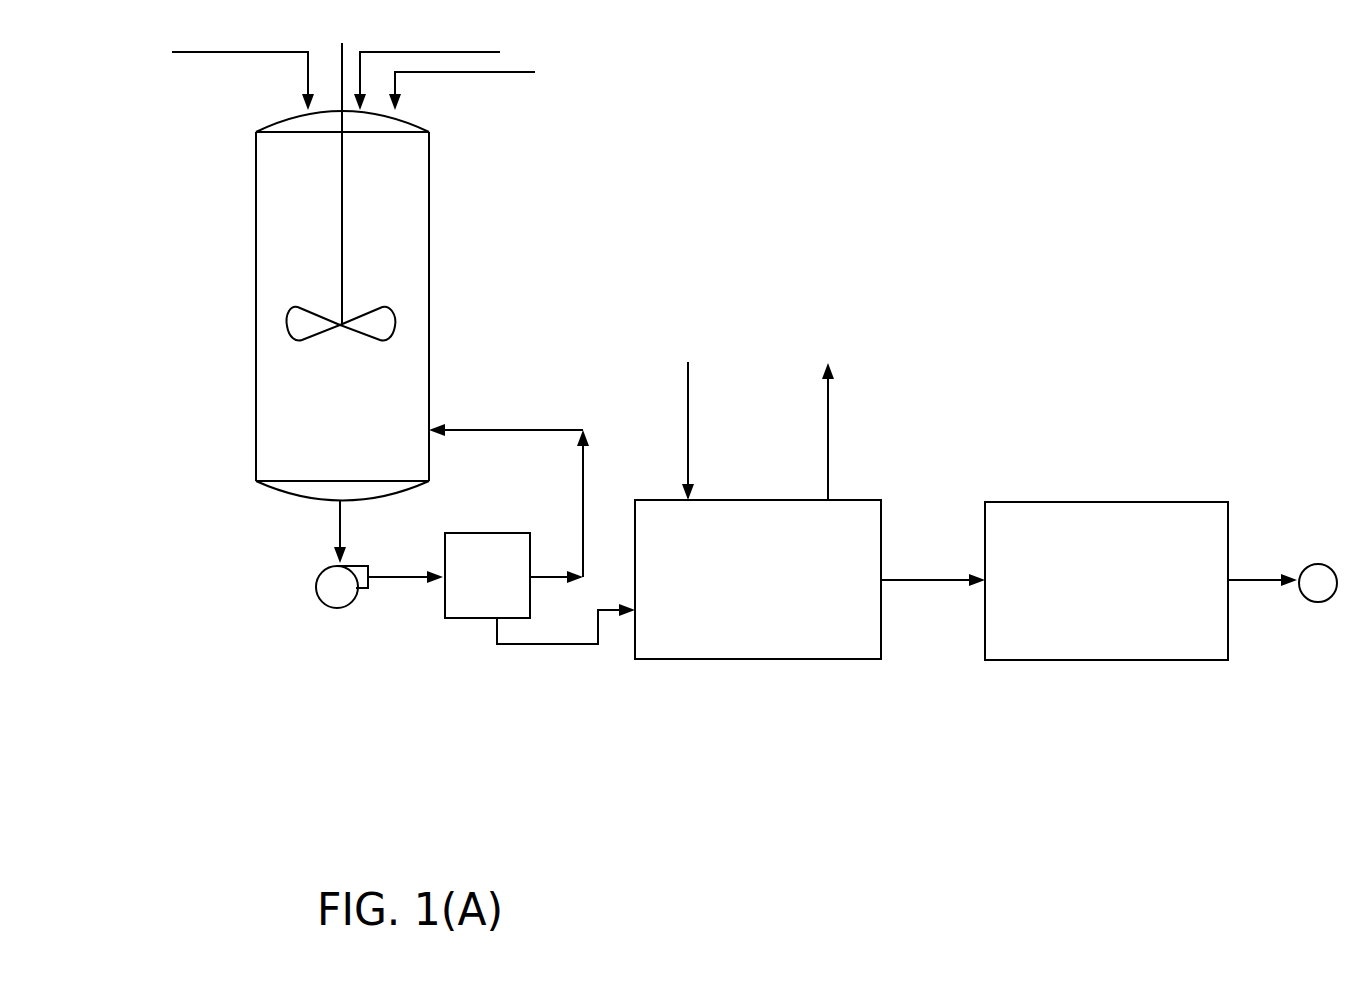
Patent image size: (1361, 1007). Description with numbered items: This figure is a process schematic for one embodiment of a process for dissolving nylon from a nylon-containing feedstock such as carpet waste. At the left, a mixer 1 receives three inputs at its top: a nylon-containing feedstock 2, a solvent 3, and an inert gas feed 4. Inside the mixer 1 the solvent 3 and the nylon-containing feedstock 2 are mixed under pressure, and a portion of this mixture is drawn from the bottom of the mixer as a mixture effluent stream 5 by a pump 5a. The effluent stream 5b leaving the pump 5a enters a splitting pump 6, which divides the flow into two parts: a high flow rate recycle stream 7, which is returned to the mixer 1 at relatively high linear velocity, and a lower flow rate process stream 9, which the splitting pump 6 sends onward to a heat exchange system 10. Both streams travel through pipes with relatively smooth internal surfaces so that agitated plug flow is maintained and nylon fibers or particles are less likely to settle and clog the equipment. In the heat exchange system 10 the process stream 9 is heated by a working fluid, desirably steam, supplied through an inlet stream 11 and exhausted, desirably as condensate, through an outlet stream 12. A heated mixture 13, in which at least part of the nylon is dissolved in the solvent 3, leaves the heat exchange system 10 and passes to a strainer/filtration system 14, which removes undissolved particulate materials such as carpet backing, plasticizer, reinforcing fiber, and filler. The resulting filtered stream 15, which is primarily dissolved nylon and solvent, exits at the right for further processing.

The mixer 1 is at (273, 235).
The nylon-containing feedstock 2 is at (231, 75).
The solvent 3 is at (437, 75).
The inert gas feed 4 is at (472, 85).
The mixture effluent stream 5 is at (340, 534).
The pump 5a is at (322, 609).
The effluent stream 5b is at (393, 580).
The splitting pump 6 is at (452, 620).
The recycle stream 7 is at (543, 576).
The process stream 9 is at (560, 647).
The heat exchange system 10 is at (700, 660).
The inlet stream 11 is at (690, 418).
The outlet stream 12 is at (846, 431).
The heated mixture 13 is at (930, 587).
The strainer/filtration system 14 is at (1100, 662).
The filtered stream 15 is at (1272, 578).